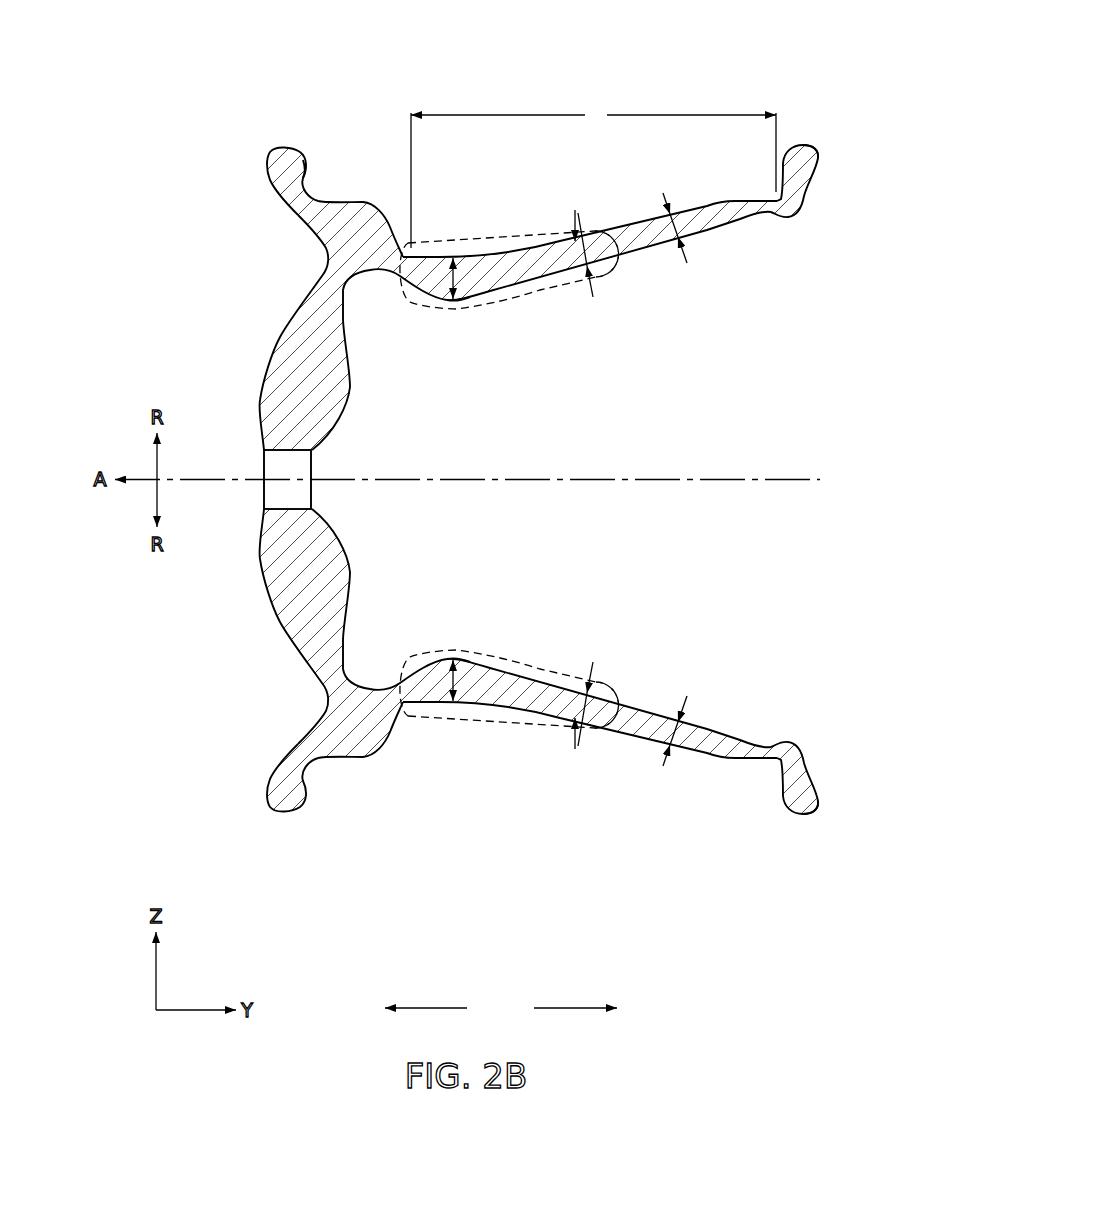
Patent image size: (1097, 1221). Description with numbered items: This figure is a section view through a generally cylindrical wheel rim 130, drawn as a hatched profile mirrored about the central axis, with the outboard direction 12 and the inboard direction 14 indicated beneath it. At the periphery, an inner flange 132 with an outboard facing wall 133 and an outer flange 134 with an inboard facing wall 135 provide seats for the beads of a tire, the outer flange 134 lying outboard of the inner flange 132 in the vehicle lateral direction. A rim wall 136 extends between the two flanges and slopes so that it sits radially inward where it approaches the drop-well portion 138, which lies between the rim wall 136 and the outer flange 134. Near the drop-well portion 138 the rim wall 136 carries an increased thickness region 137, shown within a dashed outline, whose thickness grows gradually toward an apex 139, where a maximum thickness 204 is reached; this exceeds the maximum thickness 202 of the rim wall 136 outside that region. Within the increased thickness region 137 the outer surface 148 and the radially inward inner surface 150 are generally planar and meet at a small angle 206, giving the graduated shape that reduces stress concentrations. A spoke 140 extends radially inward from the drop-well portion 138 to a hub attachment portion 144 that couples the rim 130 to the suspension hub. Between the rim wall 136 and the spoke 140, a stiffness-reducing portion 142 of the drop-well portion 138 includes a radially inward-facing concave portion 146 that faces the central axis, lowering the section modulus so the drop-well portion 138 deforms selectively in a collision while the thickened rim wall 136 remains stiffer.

The outboard direction 12 is at (433, 1008).
The inboard direction 14 is at (565, 1008).
The rim 130 is at (593, 129).
The inner flange 132 is at (844, 479).
The outboard facing wall 133 is at (783, 169).
The outer flange 134 is at (268, 790).
The inboard facing wall 135 is at (307, 166).
The rim wall 136 is at (557, 479).
The increased thickness region 137 is at (509, 479).
The drop-well portion 138 is at (381, 207).
The apex 139 is at (453, 299).
The spoke 140 is at (279, 338).
The stiffness-reducing portion 142 is at (357, 479).
The hub attachment portion 144 is at (240, 447).
The radially inward-facing concave portion 146 is at (378, 274).
The outer surface 148 is at (523, 240).
The inner surface 150 is at (543, 290).
The maximum thickness 202 is at (683, 218).
The maximum thickness 204 is at (456, 278).
The angle 206 is at (591, 232).